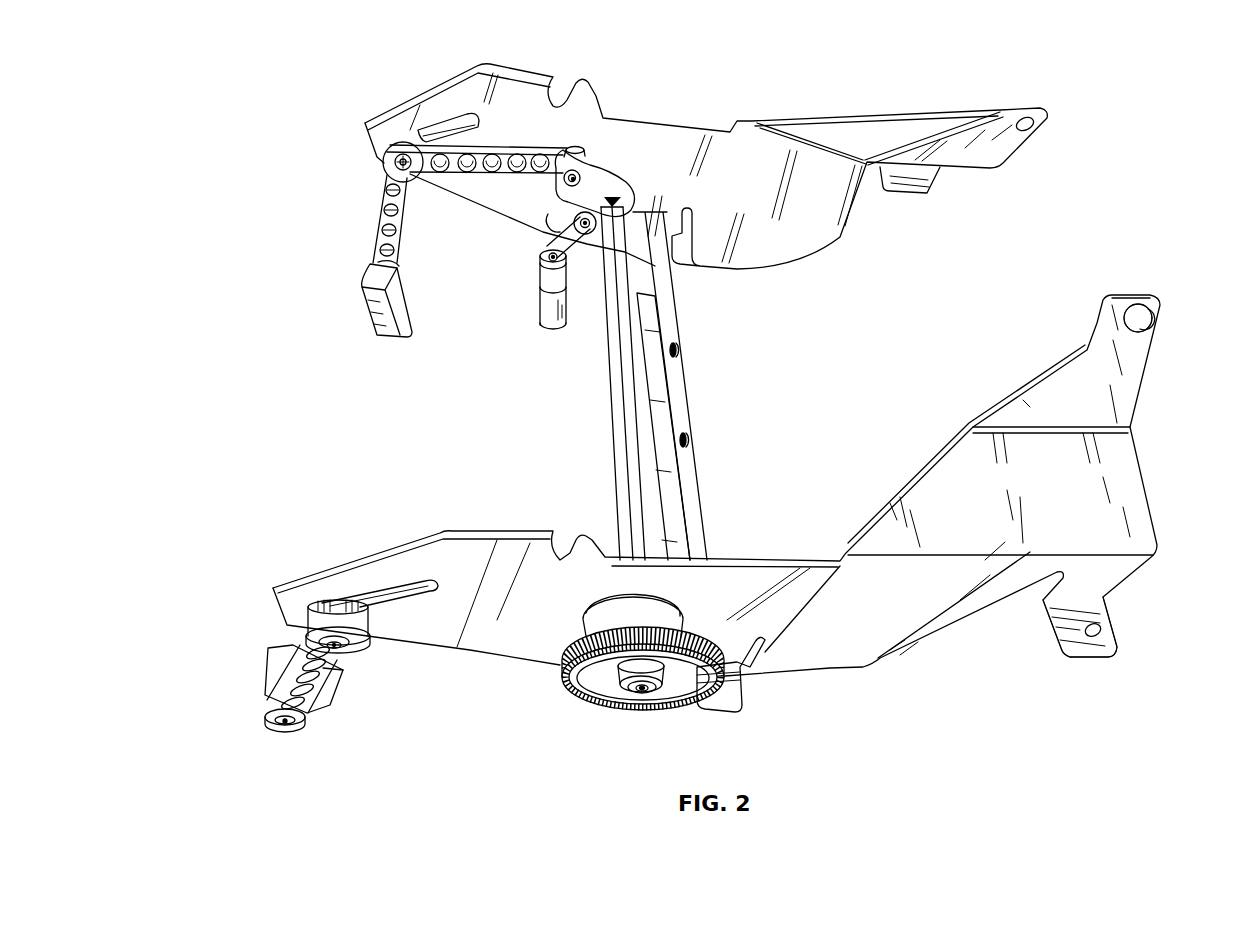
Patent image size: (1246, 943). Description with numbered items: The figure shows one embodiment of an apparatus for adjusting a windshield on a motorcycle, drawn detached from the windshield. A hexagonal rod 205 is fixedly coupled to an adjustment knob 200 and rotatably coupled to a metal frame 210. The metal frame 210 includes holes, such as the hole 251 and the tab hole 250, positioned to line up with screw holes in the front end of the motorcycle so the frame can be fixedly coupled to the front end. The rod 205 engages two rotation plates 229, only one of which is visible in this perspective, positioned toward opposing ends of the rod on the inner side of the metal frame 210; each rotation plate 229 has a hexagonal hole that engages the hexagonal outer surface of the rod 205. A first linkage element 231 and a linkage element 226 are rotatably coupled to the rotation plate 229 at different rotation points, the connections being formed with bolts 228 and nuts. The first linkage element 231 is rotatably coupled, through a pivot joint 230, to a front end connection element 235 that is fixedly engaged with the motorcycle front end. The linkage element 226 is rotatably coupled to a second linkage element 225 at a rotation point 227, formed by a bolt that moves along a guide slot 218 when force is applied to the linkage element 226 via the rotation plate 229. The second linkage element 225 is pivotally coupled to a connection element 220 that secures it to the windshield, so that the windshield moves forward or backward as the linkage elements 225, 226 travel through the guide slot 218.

The adjustment knob 200 is at (562, 693).
The hexagonal rod 205 is at (617, 390).
The metal frame 210 is at (915, 472).
The guide slot 218 is at (463, 127).
The connection element 220 is at (365, 315).
The second linkage element 225 is at (375, 215).
The linkage element 226 is at (497, 152).
The rotation point 227 is at (403, 158).
The bolts 228 is at (565, 182).
The rotation plate 229 is at (597, 183).
The pivot joint 230 is at (547, 253).
The first linkage element 231 is at (577, 237).
The front end connection element 235 is at (548, 297).
The mounting tab 250 is at (1096, 630).
The hole 251 is at (1142, 320).